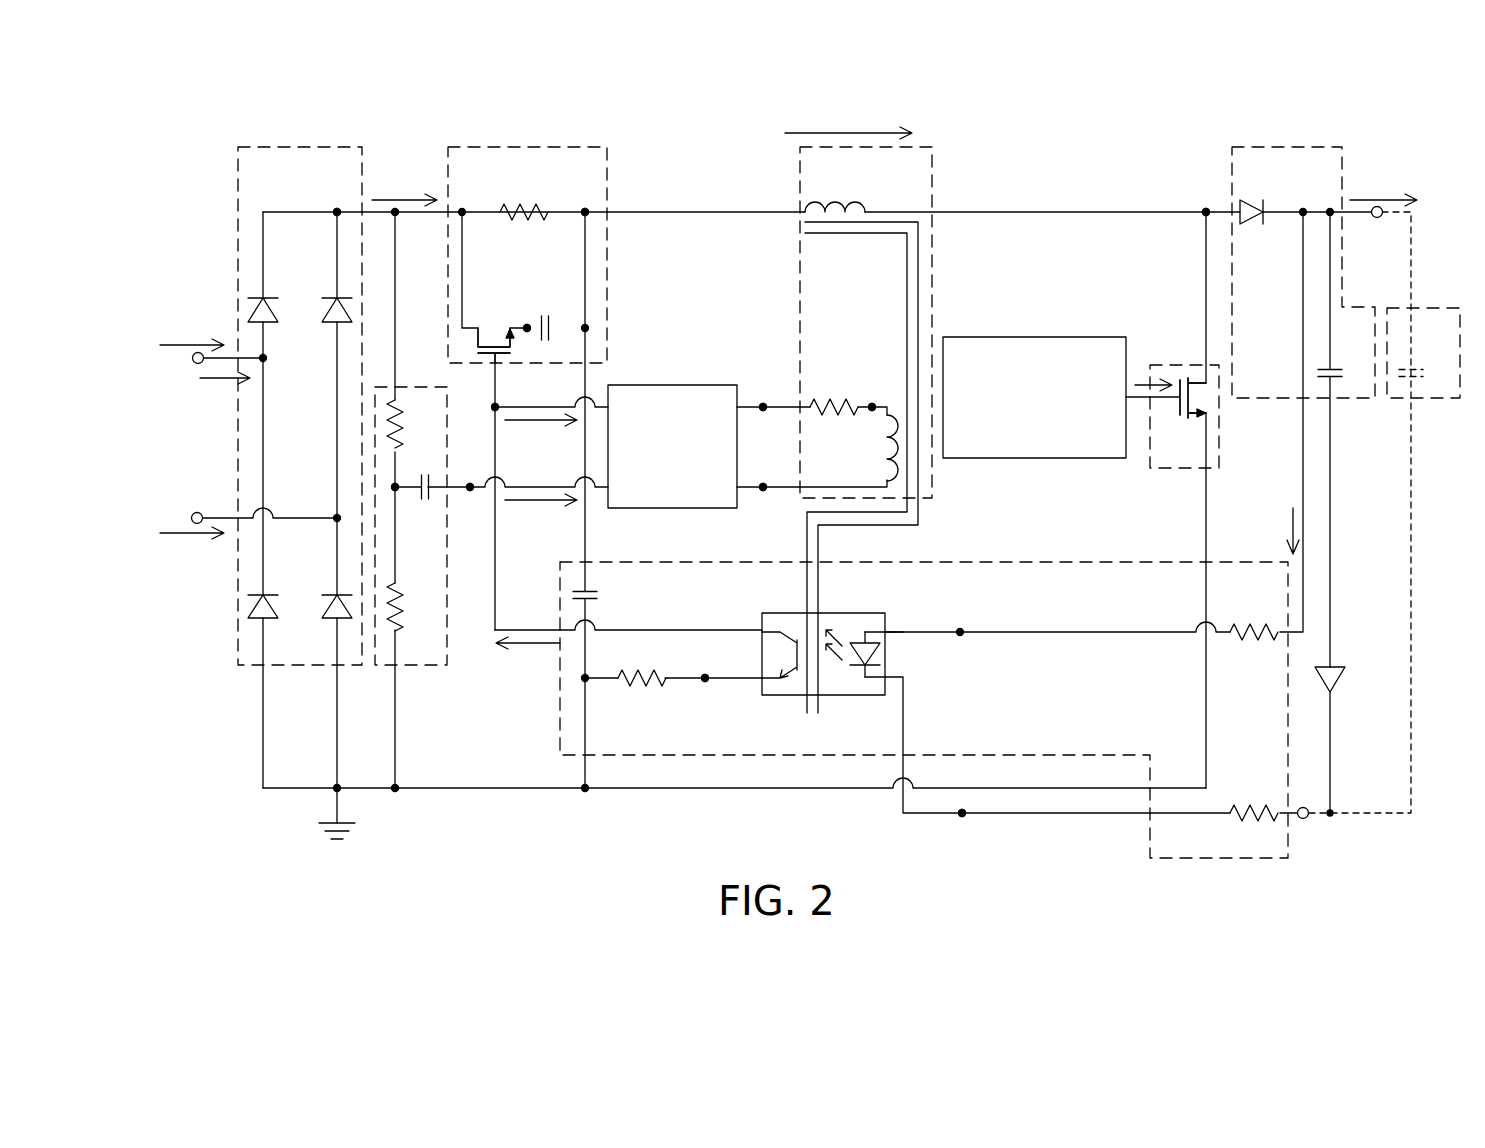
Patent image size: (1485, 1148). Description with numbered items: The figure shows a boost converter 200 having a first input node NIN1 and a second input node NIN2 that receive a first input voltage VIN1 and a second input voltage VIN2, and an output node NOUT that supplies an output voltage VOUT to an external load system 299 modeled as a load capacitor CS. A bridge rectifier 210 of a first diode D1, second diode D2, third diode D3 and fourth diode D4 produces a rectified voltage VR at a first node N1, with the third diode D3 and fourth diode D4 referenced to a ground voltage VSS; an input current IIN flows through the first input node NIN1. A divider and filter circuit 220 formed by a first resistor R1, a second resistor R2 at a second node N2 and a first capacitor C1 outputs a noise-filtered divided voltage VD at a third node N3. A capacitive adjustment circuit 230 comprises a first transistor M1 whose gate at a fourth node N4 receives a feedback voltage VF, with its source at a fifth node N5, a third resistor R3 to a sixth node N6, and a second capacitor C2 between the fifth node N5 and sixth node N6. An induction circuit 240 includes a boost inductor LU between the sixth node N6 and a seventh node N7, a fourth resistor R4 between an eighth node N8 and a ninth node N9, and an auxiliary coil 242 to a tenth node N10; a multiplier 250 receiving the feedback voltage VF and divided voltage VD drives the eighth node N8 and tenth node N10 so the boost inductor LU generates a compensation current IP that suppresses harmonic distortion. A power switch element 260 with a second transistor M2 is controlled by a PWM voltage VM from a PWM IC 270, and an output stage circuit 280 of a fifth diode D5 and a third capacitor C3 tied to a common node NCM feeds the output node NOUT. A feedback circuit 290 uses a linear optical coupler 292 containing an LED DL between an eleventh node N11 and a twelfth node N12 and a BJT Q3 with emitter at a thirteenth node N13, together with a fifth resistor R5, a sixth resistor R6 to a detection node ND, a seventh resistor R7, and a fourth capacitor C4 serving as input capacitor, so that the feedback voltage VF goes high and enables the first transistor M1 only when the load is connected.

The boost converter 200 is at (190, 110).
The bridge rectifier 210 is at (240, 147).
The divider and filter circuit 220 is at (432, 667).
The capacitive adjustment circuit 230 is at (448, 147).
The induction circuit 240 is at (932, 175).
The auxiliary coil 242 is at (887, 452).
The multiplier 250 is at (608, 385).
The power switch element 260 is at (1180, 468).
The PWM IC 270 is at (943, 337).
The output stage circuit 280 is at (1232, 147).
The feedback circuit 290 is at (1010, 562).
The linear optical coupler 292 is at (845, 613).
The load system 299 is at (1390, 398).
The first diode D1 is at (266, 326).
The second diode D2 is at (335, 298).
The third diode D3 is at (266, 622).
The fourth diode D4 is at (335, 595).
The fifth diode D5 is at (1255, 200).
The first resistor R1 is at (398, 440).
The second resistor R2 is at (398, 622).
The third resistor R3 is at (520, 206).
The fourth resistor R4 is at (823, 400).
The fifth resistor R5 is at (1258, 645).
The sixth resistor R6 is at (1250, 805).
The seventh resistor R7 is at (628, 690).
The first capacitor C1 is at (427, 500).
The second capacitor C2 is at (550, 322).
The third capacitor C3 is at (1340, 367).
The fourth capacitor C4 is at (598, 596).
The load capacitor CS is at (1418, 367).
The first transistor M1 is at (493, 335).
The second transistor M2 is at (1196, 415).
The BJT Q3 is at (762, 662).
The LED DL is at (885, 660).
The boost inductor LU is at (838, 205).
The first node N1 is at (337, 210).
The second node N2 is at (398, 486).
The third node N3 is at (470, 491).
The fourth node N4 is at (492, 412).
The fifth node N5 is at (527, 322).
The sixth node N6 is at (585, 210).
The seventh node N7 is at (1206, 210).
The eighth node N8 is at (763, 403).
The ninth node N9 is at (872, 403).
The tenth node N10 is at (763, 492).
The eleventh node N11 is at (960, 632).
The twelfth node N12 is at (965, 817).
The thirteenth node N13 is at (705, 684).
The rectified voltage VR is at (404, 186).
The feedback voltage VF is at (536, 548).
The divided voltage VD is at (541, 511).
The PWM voltage VM is at (1147, 380).
The compensation current IP is at (848, 121).
The first input voltage VIN1 is at (188, 331).
The second input voltage VIN2 is at (188, 547).
The input current IIN is at (220, 378).
The first input node NIN1 is at (196, 362).
The second input node NIN2 is at (192, 518).
The output voltage VOUT is at (1290, 530).
The output node NOUT is at (1380, 205).
The common node NCM is at (1338, 690).
The detection node ND is at (1308, 820).
The ground voltage VSS is at (332, 850).